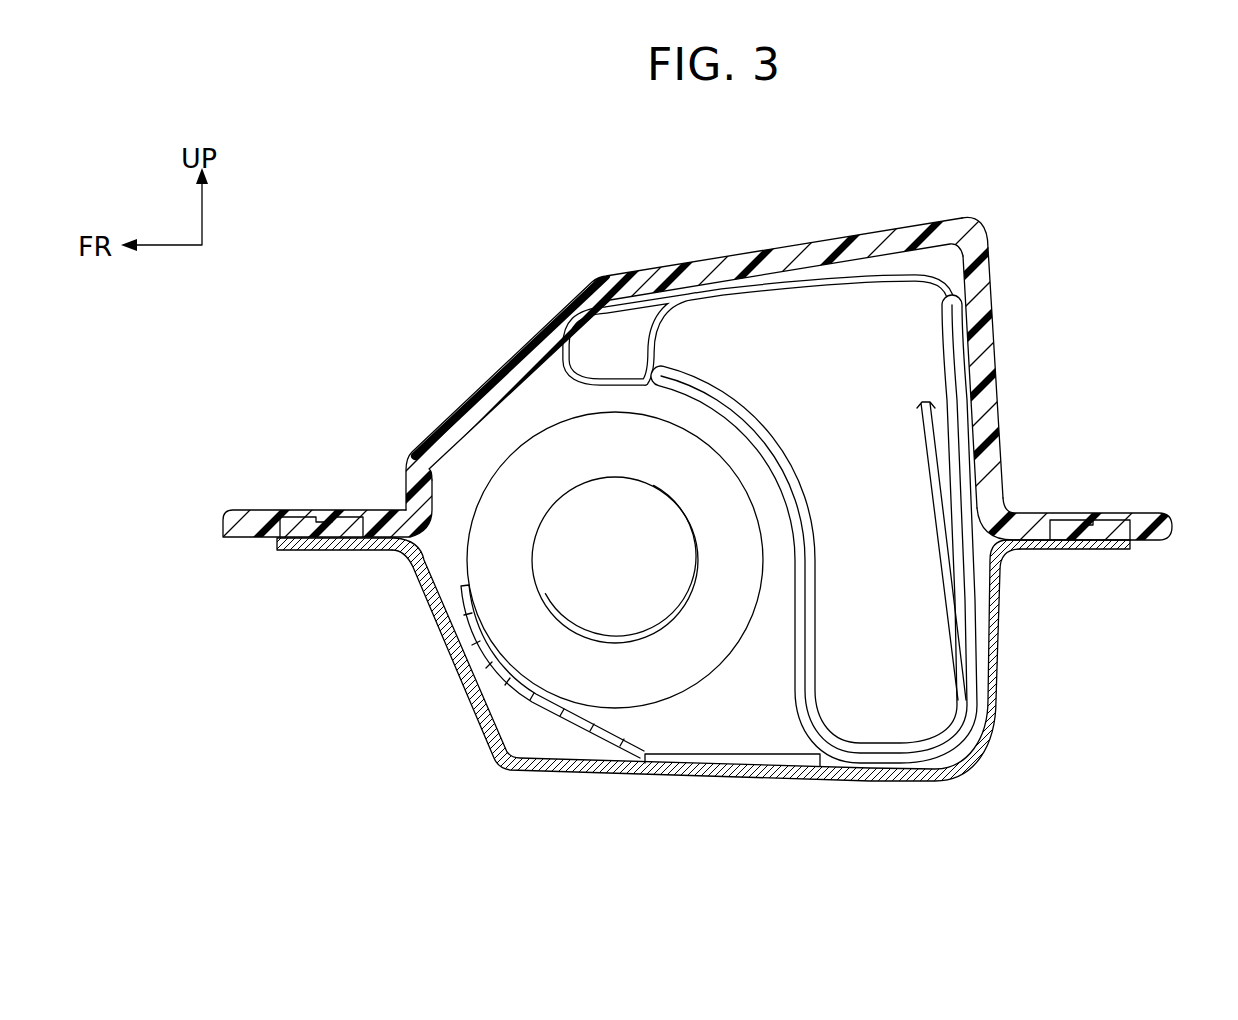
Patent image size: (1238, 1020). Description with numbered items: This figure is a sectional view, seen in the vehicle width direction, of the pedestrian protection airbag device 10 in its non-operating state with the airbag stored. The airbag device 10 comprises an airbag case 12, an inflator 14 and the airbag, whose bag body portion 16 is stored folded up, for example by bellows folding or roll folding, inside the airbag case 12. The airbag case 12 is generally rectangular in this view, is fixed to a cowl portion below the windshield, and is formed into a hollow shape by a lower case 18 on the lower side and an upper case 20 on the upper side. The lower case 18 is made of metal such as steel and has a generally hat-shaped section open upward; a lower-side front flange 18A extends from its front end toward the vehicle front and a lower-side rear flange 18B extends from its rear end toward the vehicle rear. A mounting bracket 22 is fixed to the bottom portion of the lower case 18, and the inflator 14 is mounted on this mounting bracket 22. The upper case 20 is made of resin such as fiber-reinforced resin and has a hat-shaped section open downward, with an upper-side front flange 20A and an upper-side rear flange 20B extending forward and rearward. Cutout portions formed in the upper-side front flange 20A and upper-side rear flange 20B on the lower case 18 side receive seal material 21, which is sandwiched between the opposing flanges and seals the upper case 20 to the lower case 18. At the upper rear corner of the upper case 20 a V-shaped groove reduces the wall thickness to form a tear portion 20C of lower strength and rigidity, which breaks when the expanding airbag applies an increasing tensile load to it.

The airbag device 10 is at (619, 510).
The airbag case 12 is at (619, 510).
The inflator 14 is at (617, 685).
The bag body portion 16 is at (802, 293).
The lower case 18 is at (716, 721).
The lower-side front flange 18A is at (332, 550).
The lower-side rear flange 18B is at (1097, 549).
The upper case 20 is at (1001, 398).
The upper-side front flange 20A is at (262, 508).
The upper-side rear flange 20B is at (1143, 511).
The tear portion 20C is at (965, 242).
The seal material 21 is at (340, 516).
The mounting bracket 22 is at (540, 703).